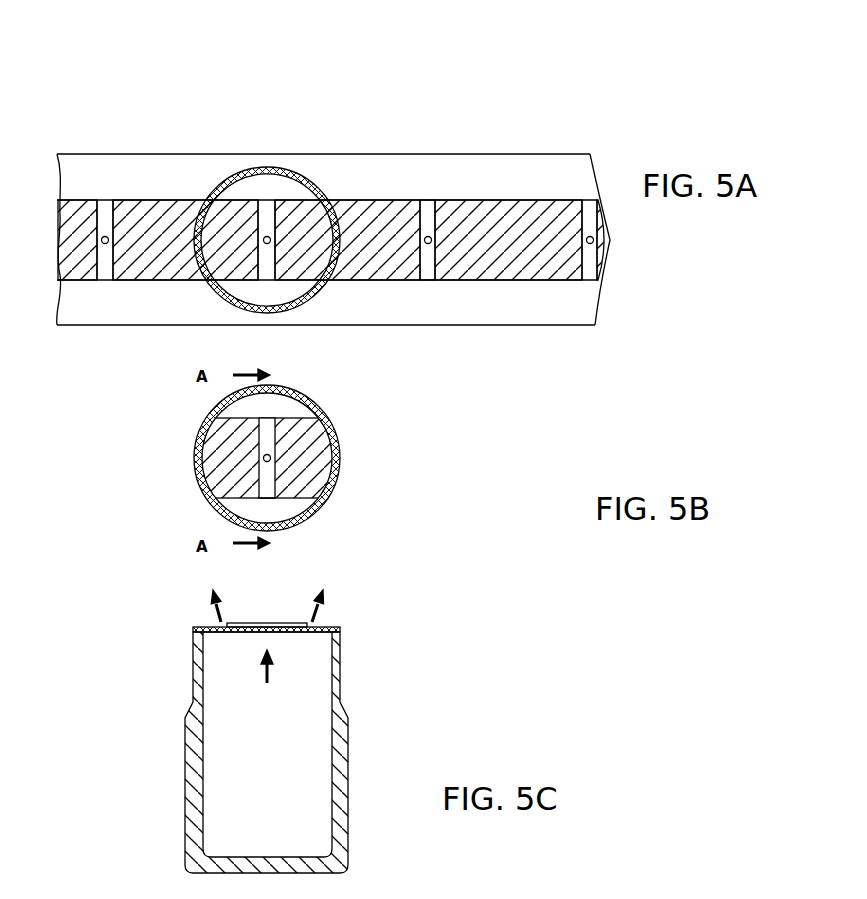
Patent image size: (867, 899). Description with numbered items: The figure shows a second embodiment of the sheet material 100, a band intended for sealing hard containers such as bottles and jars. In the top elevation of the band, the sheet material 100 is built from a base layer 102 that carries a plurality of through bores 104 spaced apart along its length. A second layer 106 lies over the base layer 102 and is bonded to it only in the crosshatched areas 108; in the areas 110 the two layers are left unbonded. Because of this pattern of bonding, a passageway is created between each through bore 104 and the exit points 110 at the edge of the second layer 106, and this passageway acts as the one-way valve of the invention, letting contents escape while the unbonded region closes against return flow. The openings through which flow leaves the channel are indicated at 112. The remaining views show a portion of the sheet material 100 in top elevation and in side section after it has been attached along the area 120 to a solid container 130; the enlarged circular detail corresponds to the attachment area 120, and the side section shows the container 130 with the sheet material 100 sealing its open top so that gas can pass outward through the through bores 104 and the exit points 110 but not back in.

In FIG. 5A, the sheet material 100 is at (577, 110).
In FIG. 5C, the sheet material 100 is at (198, 622).
In FIG. 5B, the base layer 102 is at (262, 510).
In FIG. 5A, the through bores 104 is at (593, 243).
In FIG. 5B, the through bores 104 is at (269, 460).
In FIG. 5A, the second layer 106 is at (550, 288).
In FIG. 5B, the second layer 106 is at (317, 455).
In FIG. 5A, the crosshatched areas 108 is at (533, 212).
In FIG. 5A, the unbonded areas / exit points 110 is at (429, 212).
In FIG. 5B, the unbonded areas / exit points 110 is at (262, 477).
In FIG. 5A, the channel opening 112 is at (427, 185).
In FIG. 5B, the channel opening 112 is at (280, 508).
In FIG. 5A, the attachment area 120 is at (267, 240).
In FIG. 5B, the attachment area 120 is at (200, 433).
In FIG. 5C, the solid container 130 is at (197, 743).